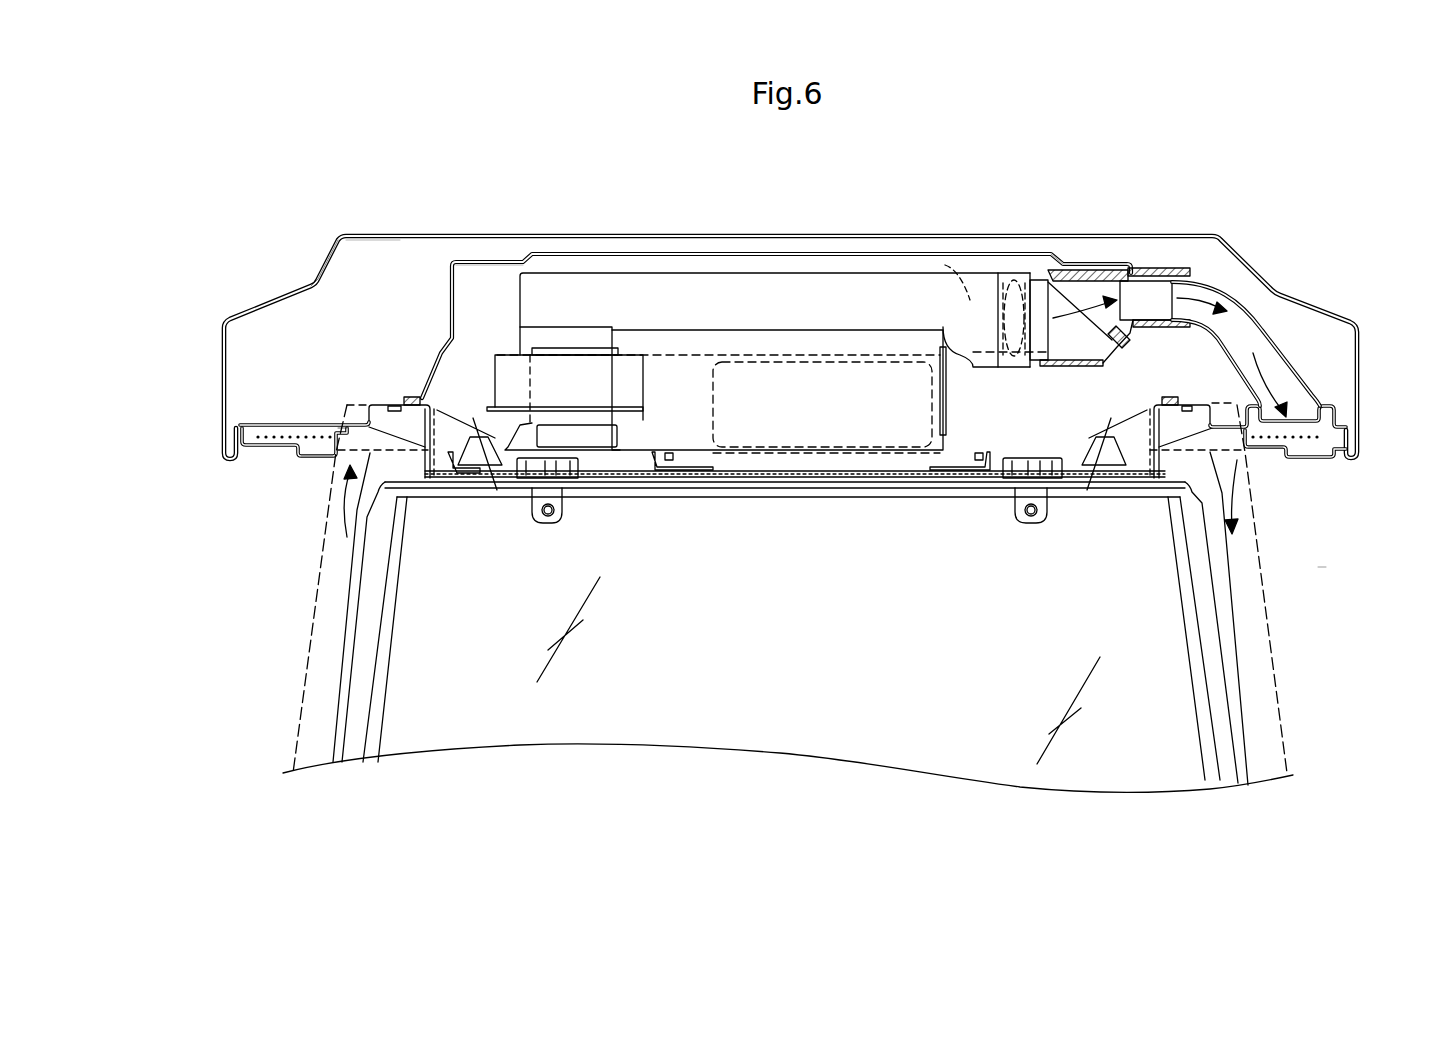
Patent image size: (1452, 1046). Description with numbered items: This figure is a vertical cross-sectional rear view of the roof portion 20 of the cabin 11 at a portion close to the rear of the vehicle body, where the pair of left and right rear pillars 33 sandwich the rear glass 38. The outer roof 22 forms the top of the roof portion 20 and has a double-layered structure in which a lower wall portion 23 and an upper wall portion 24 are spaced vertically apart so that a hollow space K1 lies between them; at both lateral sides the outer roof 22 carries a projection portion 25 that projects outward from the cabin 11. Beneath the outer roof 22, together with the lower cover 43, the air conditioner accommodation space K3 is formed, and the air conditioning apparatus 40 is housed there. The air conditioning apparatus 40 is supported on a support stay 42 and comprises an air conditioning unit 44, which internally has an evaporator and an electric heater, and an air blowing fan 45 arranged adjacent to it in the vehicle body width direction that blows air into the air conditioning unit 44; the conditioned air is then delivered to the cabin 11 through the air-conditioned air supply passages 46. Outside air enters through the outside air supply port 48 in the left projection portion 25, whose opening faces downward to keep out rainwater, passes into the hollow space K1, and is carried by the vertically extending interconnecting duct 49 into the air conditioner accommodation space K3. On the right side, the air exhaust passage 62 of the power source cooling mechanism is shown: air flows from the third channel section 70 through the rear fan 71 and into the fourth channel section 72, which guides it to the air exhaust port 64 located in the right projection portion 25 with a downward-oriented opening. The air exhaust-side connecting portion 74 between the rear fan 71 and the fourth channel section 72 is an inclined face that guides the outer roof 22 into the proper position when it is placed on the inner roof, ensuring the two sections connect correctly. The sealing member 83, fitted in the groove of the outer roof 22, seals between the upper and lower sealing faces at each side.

The cabin 11 is at (1322, 568).
The roof portion 20 is at (1222, 232).
The outer roof 22 is at (317, 270).
The lower wall portion 23 is at (813, 260).
The upper wall portion 24 is at (1049, 232).
The projection portion 25 is at (229, 458).
The rear pillar 33 is at (352, 598).
The rear glass 38 is at (818, 728).
The air conditioning apparatus 40 is at (752, 320).
The support stay 42 is at (453, 483).
The lower cover 43 is at (912, 482).
The air conditioning unit 44 is at (812, 442).
The air blowing fan 45 is at (574, 380).
The air-conditioned air supply passage 46 is at (478, 420).
The outside air supply port 48 is at (297, 460).
The interconnecting duct 49 is at (946, 266).
The air exhaust passage 62 is at (1154, 262).
The air exhaust port 64 is at (1282, 462).
The third channel section 70 is at (656, 284).
The rear fan 71 is at (1055, 347).
The fourth channel section 72 is at (1284, 348).
The air exhaust-side connecting portion 74 is at (1100, 324).
The sealing member 83 is at (412, 396).
The hollow space K1 is at (362, 268).
The air conditioner accommodation space K3 is at (488, 286).